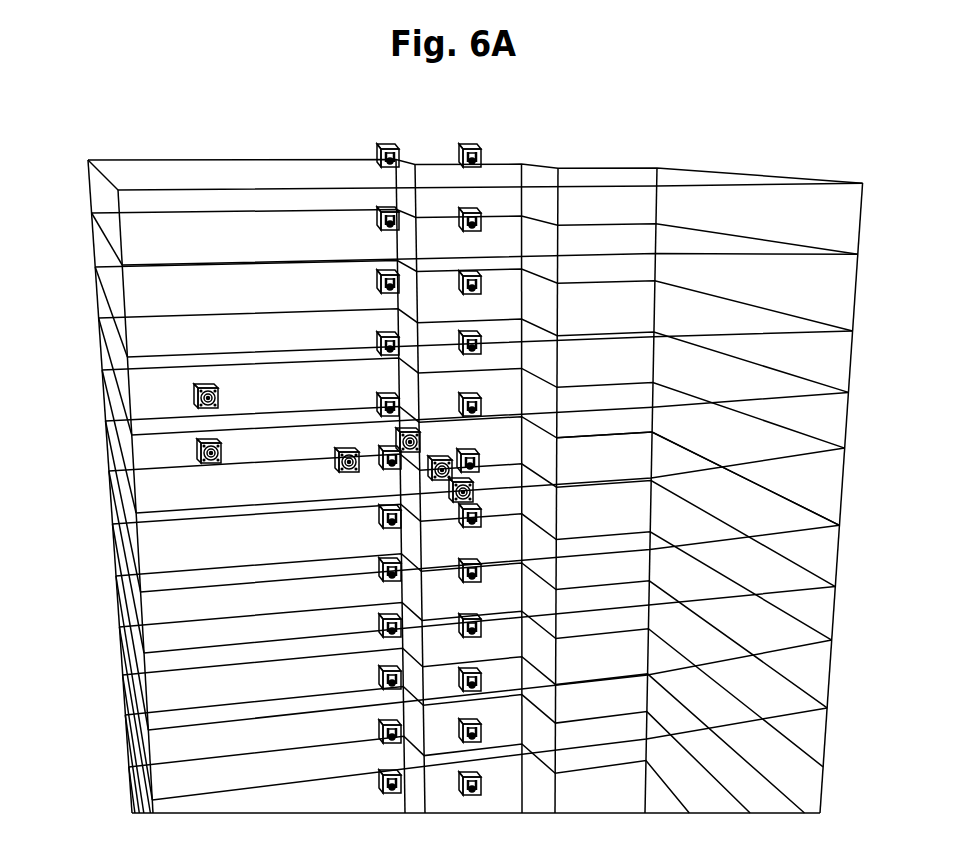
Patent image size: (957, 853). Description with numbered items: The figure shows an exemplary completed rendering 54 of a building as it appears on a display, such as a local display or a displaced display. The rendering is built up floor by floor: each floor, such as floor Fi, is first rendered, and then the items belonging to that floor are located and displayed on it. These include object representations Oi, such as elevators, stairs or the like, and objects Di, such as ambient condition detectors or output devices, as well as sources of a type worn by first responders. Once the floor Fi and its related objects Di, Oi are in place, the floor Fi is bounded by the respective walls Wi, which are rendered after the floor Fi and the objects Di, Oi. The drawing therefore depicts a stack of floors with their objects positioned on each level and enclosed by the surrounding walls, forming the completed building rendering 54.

The completed rendering 54 is at (78, 406).
The floor Fi is at (805, 461).
The walls Wi is at (840, 428).
The objects Di is at (328, 464).
The object representations Oi is at (498, 454).